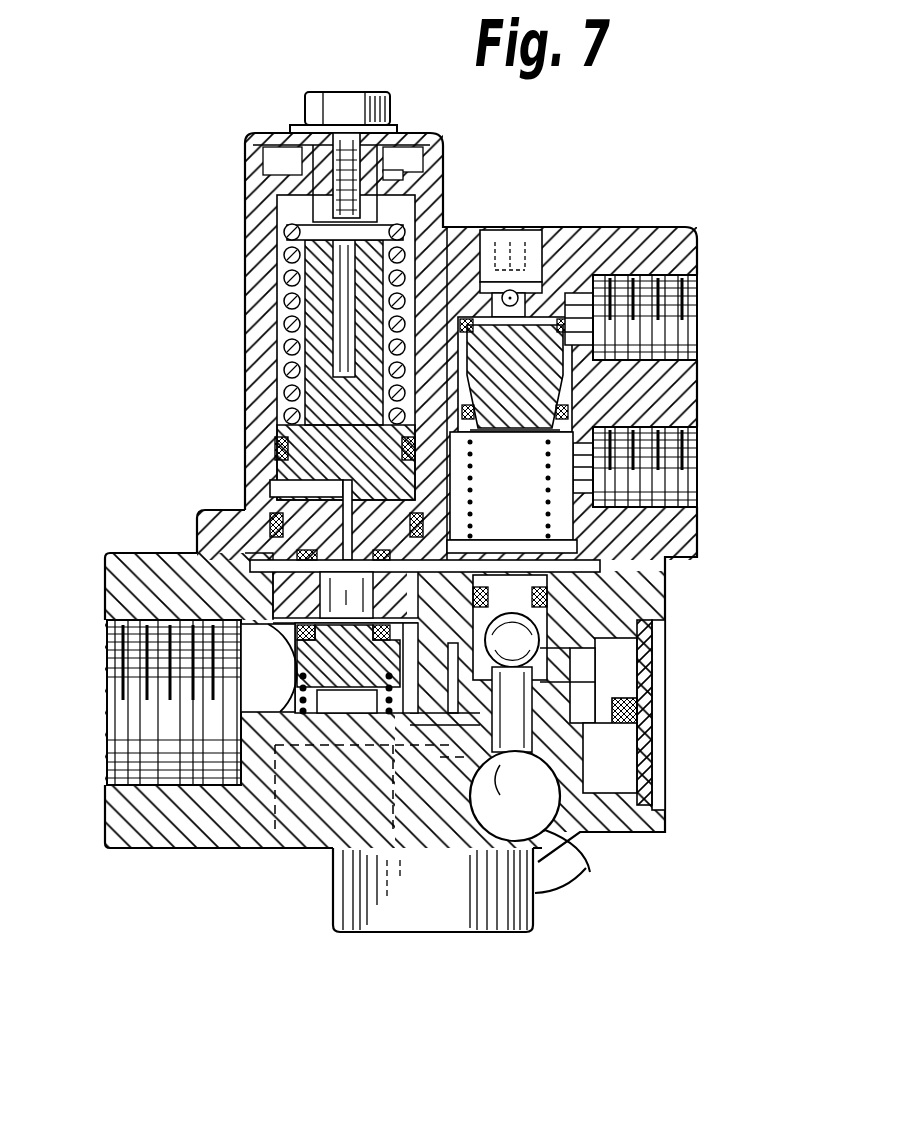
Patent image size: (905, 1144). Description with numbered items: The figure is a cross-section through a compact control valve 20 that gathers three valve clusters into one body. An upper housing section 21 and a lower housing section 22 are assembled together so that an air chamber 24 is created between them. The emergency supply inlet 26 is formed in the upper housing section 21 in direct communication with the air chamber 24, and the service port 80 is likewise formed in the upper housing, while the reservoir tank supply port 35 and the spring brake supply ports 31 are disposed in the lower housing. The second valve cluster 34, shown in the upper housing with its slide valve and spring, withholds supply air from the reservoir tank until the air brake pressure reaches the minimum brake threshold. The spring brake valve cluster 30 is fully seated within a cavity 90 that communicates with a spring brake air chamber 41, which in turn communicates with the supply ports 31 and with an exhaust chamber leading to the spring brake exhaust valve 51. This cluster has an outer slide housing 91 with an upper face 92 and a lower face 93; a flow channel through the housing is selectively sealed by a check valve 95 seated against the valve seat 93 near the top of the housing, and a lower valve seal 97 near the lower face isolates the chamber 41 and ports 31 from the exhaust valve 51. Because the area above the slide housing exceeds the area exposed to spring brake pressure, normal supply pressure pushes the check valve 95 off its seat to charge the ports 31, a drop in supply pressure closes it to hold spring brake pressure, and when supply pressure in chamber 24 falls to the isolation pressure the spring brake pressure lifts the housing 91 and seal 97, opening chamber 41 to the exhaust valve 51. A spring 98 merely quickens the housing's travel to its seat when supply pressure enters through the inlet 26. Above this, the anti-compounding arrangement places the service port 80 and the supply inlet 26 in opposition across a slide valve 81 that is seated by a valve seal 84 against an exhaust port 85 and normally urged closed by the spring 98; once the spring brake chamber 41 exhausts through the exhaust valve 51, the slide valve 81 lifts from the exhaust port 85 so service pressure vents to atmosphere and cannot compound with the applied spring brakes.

The control valve 20 is at (222, 852).
The upper housing section 21 is at (243, 408).
The lower housing section 22 is at (105, 580).
The air chamber 24 is at (568, 566).
The emergency supply inlet 26 is at (678, 480).
The spring brake valve cluster 30 is at (583, 602).
The spring brake supply ports 31 is at (422, 912).
The second valve cluster 34 is at (278, 301).
The reservoir tank supply port 35 is at (145, 712).
The spring brake air chamber 41 is at (596, 873).
The spring brake exhaust valve 51 is at (652, 779).
The service port 80 is at (670, 327).
The slide valve 81 is at (545, 405).
The valve seal 84 is at (546, 317).
The exhaust port 85 is at (510, 230).
The cavity 90 is at (622, 713).
The outer slide housing 91 is at (595, 682).
The upper face 92 is at (462, 560).
The valve seat 93 is at (525, 587).
The check valve 95 is at (637, 648).
The lower valve seal 97 is at (610, 758).
The spring 98 is at (547, 468).